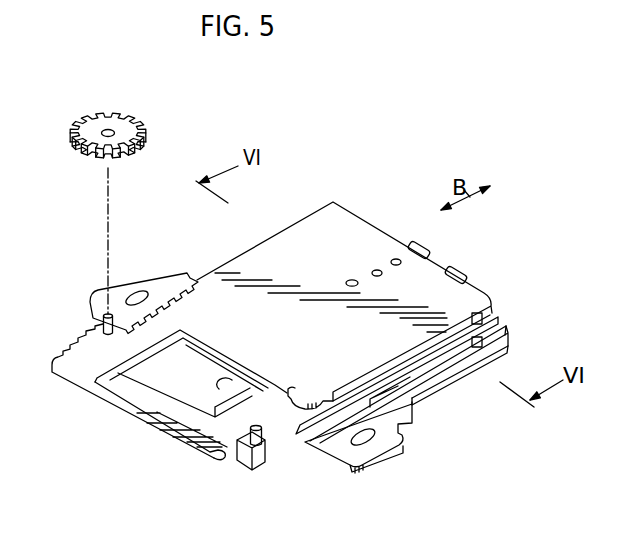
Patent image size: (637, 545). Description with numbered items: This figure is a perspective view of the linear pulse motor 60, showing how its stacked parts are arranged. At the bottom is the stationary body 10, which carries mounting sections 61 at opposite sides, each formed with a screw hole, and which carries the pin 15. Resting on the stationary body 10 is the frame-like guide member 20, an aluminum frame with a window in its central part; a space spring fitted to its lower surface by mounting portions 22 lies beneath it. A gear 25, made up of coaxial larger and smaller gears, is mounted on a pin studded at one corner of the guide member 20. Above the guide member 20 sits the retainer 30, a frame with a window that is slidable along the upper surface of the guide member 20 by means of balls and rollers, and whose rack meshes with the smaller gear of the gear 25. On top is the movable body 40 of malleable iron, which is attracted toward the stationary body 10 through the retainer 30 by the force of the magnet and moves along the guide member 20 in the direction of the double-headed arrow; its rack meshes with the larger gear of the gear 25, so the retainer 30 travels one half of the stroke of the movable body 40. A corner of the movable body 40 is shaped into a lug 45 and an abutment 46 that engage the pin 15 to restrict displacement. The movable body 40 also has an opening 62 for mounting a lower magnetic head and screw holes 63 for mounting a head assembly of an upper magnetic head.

The stationary body 10 is at (448, 382).
The pin 15 is at (258, 467).
The guide member 20 is at (500, 334).
The mounting portions 22 is at (422, 380).
The gear 25 is at (104, 118).
The retainer 30 is at (492, 322).
The movable body 40 is at (212, 288).
The lug 45 is at (204, 463).
The abutment 46 is at (302, 407).
The linear pulse motor 60 is at (470, 413).
The mounting sections 61 is at (90, 302).
The opening 62 is at (157, 412).
The screw holes 63 is at (372, 270).